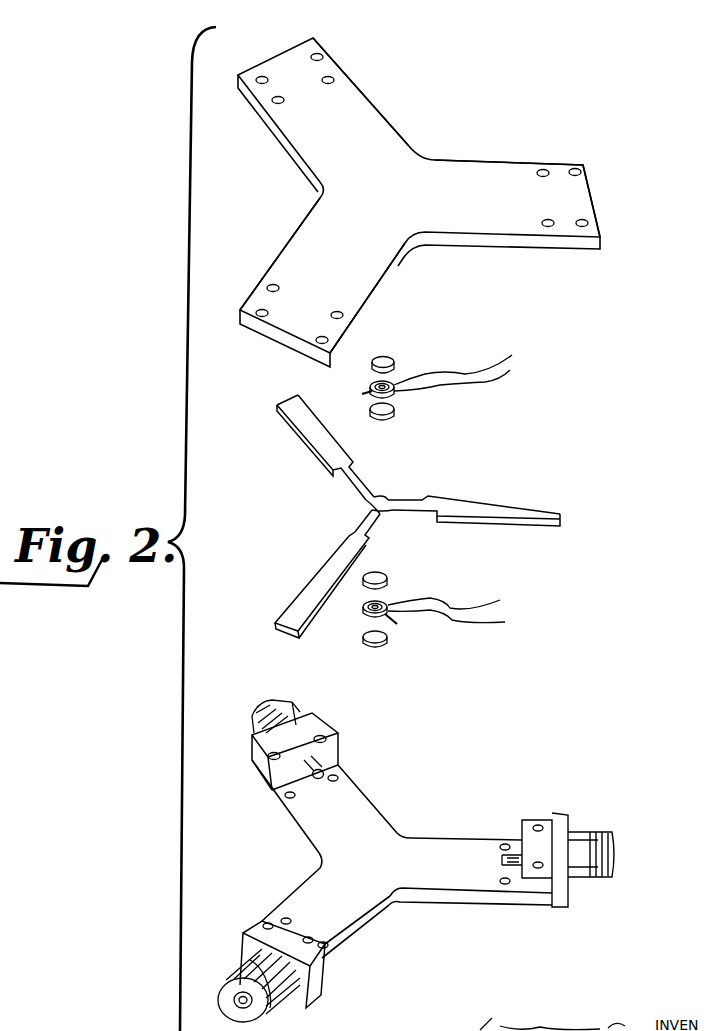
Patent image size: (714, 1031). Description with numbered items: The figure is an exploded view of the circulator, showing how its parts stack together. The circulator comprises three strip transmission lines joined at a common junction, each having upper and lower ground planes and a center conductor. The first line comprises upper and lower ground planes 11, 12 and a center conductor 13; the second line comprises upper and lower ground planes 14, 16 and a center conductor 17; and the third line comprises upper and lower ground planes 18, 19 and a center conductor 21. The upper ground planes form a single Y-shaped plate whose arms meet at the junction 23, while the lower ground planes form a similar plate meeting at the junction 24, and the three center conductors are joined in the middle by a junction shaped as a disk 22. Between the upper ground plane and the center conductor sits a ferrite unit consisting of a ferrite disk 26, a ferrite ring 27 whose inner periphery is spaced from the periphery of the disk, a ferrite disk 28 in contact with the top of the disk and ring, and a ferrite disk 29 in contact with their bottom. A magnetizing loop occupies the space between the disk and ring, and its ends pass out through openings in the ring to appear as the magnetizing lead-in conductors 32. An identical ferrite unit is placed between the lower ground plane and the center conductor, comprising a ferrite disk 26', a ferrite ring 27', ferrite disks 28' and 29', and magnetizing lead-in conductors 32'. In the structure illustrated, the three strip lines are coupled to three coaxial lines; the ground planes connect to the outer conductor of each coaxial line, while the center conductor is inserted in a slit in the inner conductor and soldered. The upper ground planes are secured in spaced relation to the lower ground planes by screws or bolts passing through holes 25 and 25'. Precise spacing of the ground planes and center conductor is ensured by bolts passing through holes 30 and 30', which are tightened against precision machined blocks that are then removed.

The upper ground plane 11 is at (504, 226).
The lower ground plane 12 is at (456, 838).
The center conductor 13 is at (404, 500).
The upper ground plane 14 is at (356, 110).
The lower ground plane 16 is at (345, 800).
The center conductor 17 is at (340, 478).
The upper ground plane 18 is at (294, 245).
The lower ground plane 19 is at (312, 884).
The center conductor 21 is at (372, 532).
The disk 22 is at (362, 513).
The junction of the upper ground planes 23 is at (412, 188).
The junction of the lower ground planes 24 is at (396, 836).
The holes 25 is at (440, 196).
The holes 25' is at (400, 855).
The ferrite disk 26 is at (407, 367).
The ferrite disk 26' is at (352, 621).
The ferrite ring 27 is at (349, 391).
The ferrite ring 27' is at (410, 626).
The ferrite disk 28 is at (394, 342).
The ferrite disk 28' is at (358, 649).
The ferrite disk 29 is at (406, 408).
The ferrite disk 29' is at (406, 572).
The holes 30 is at (410, 198).
The holes 30' is at (362, 837).
The magnetizing lead-in conductors 32 is at (453, 358).
The magnetizing lead-in conductors 32' is at (448, 596).